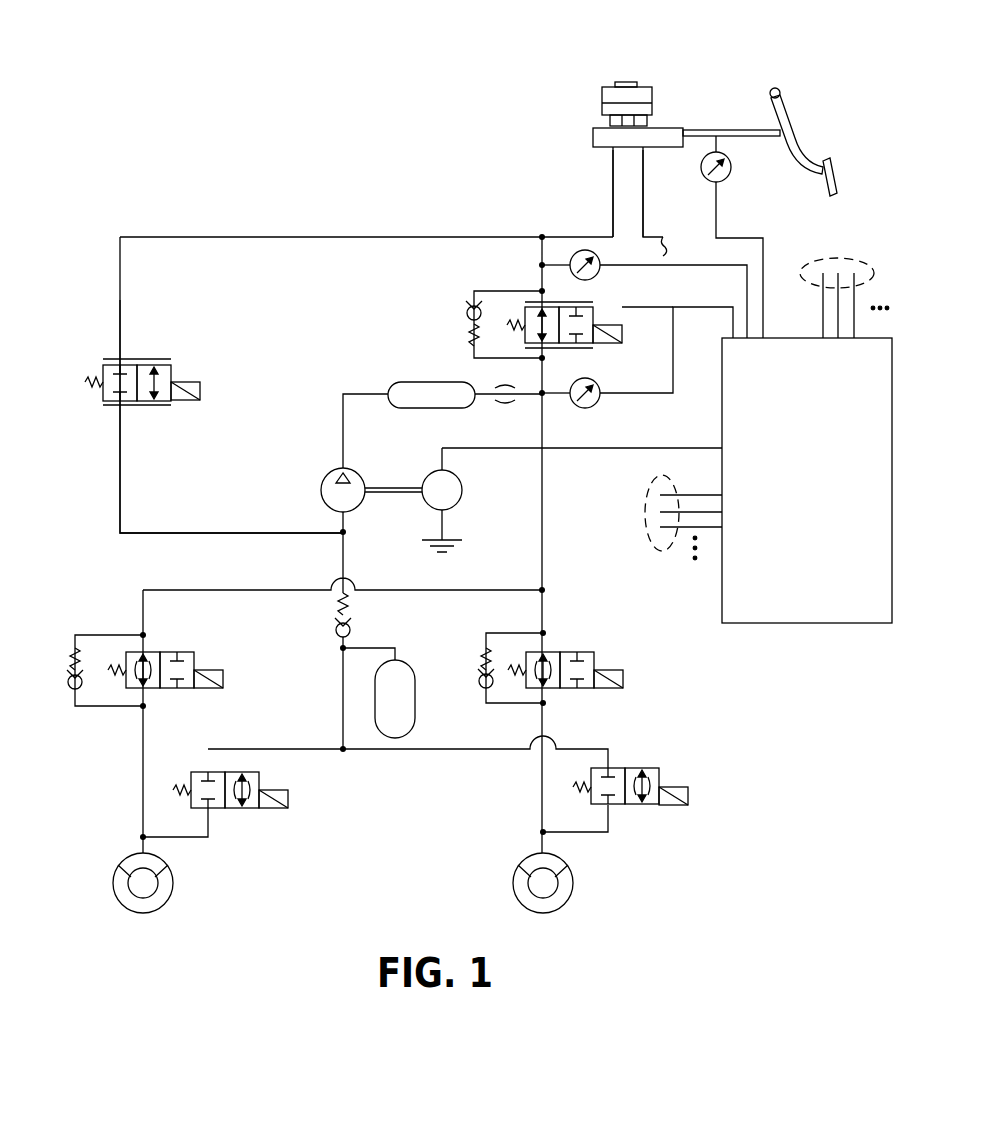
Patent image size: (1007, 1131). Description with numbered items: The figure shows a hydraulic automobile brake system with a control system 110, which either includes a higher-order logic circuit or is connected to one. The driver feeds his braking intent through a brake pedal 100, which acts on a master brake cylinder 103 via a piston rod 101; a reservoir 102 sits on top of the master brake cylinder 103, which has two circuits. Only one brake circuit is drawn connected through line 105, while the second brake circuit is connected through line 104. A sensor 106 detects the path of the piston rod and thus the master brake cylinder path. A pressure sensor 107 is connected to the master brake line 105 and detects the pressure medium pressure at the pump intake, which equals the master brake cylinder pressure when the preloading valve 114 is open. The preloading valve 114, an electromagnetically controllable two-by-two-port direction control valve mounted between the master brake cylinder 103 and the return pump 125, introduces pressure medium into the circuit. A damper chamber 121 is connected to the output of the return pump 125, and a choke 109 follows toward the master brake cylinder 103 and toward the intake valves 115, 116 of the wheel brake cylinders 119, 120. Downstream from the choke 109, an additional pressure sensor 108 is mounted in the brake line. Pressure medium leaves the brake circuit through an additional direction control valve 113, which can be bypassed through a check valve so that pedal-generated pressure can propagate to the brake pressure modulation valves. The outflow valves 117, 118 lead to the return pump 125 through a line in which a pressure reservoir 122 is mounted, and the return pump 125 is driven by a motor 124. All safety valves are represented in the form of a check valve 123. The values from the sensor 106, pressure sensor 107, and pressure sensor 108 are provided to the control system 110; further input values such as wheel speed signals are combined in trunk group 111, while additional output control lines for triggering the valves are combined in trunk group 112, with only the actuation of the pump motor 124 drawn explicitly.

The brake pedal 100 is at (827, 158).
The piston rod 101 is at (690, 131).
The reservoir 102 is at (608, 93).
The master brake cylinder 103 is at (593, 137).
The line 104 is at (644, 155).
The line 105 is at (613, 187).
The sensor 106 is at (728, 162).
The pressure sensor 107 is at (600, 270).
The pressure sensor 108 is at (600, 400).
The choke 109 is at (505, 401).
The control system 110 is at (812, 624).
The trunk group 111 is at (856, 262).
The trunk group 112 is at (646, 517).
The 2/2-port direction control valve 113 is at (594, 332).
The preloading valve 114 is at (171, 368).
The intake valve 115 is at (194, 658).
The intake valve 116 is at (600, 690).
The outflow valve 117 is at (665, 805).
The outflow valve 118 is at (268, 805).
The wheel brake cylinder 119 is at (168, 873).
The wheel brake cylinder 120 is at (570, 873).
The damper chamber 121 is at (396, 380).
The pressure reservoir 122 is at (415, 700).
The check valve 123 is at (72, 660).
The motor 124 is at (462, 490).
The return pump 125 is at (290, 447).